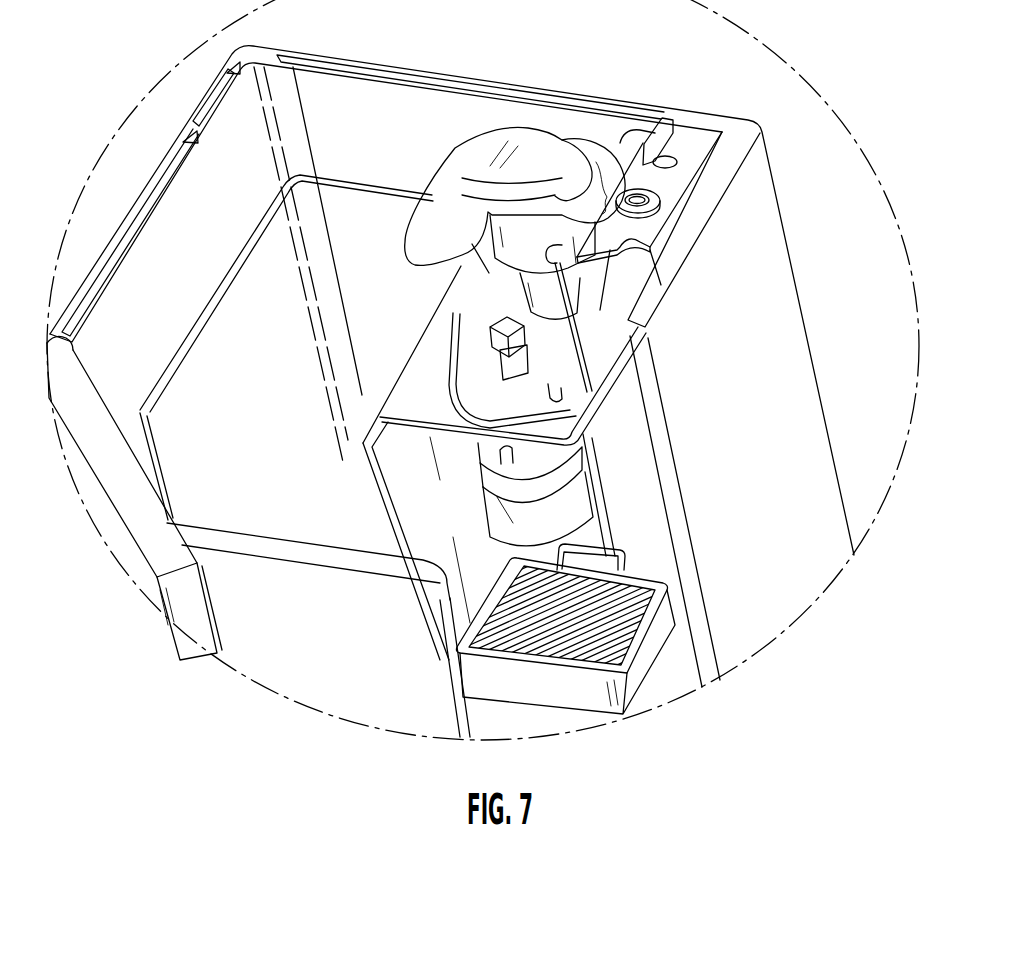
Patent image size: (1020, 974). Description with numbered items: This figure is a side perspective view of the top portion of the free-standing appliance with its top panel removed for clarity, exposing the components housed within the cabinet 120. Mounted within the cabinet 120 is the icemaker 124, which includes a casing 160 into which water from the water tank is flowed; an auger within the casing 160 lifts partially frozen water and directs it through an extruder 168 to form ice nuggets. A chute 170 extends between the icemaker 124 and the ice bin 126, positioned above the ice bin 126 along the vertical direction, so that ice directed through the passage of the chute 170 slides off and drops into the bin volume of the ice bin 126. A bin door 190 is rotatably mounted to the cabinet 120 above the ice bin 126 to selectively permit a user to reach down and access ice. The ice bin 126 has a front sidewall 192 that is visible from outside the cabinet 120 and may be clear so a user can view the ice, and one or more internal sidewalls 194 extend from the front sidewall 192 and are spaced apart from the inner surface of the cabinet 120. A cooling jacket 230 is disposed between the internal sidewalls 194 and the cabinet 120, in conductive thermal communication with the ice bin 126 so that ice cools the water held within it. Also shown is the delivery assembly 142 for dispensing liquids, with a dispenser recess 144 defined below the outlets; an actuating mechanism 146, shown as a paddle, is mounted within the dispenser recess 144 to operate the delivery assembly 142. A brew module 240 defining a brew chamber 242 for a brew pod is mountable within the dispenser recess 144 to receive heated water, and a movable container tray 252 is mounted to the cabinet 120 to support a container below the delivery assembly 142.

The cabinet 120 is at (143, 197).
The icemaker 124 is at (617, 127).
The ice bin 126 is at (333, 690).
The delivery assembly 142 is at (624, 415).
The dispenser recess 144 is at (657, 563).
The actuating mechanism 146 is at (603, 541).
The casing 160 is at (600, 300).
The extruder 168 is at (592, 143).
The chute 170 is at (485, 128).
The bin door 190 is at (137, 527).
The front sidewall 192 is at (318, 558).
The internal sidewall 194 is at (217, 293).
The cooling jacket 230 is at (145, 458).
The brew module 240 is at (584, 455).
The brew chamber 242 is at (570, 507).
The movable container tray 252 is at (651, 656).